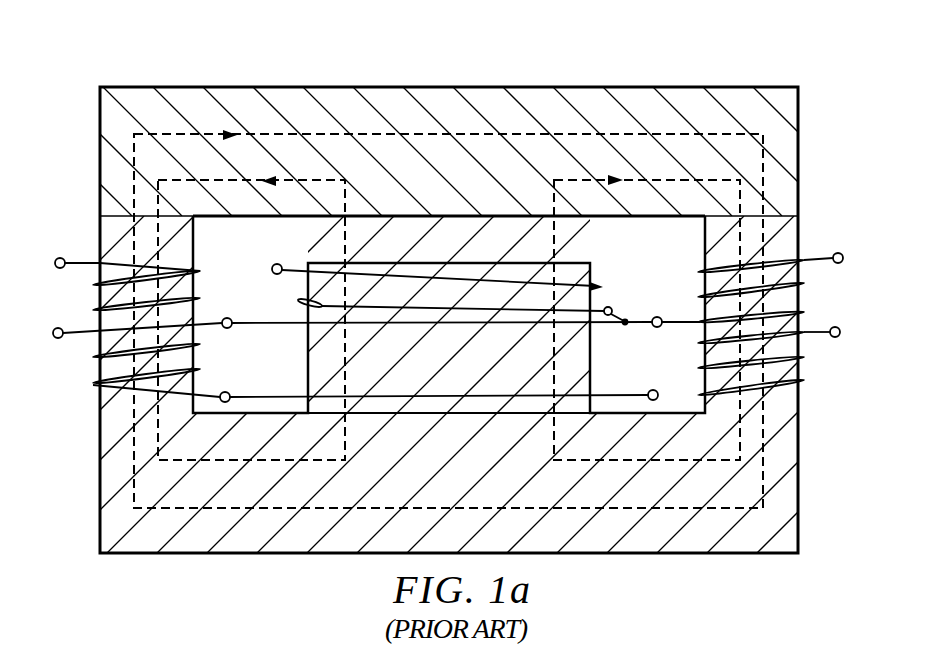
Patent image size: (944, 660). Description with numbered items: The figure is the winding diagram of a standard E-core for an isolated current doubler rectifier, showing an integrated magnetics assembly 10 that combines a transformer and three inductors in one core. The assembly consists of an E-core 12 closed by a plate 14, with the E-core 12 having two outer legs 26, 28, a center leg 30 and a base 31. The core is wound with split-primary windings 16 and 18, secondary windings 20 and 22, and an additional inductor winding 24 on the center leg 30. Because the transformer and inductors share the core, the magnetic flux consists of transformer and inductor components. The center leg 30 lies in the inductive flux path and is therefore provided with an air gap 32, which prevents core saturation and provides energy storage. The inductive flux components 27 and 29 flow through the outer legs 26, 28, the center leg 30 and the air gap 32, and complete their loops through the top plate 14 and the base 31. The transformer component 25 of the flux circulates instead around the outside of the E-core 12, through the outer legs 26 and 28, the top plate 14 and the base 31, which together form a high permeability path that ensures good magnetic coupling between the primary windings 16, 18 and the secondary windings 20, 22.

The integrated magnetics assembly 10 is at (586, 64).
The E-core 12 is at (668, 494).
The plate 14 is at (175, 150).
The split-primary winding 16 is at (93, 357).
The split-primary winding 18 is at (805, 357).
The secondary winding 20 is at (93, 310).
The secondary winding 22 is at (805, 283).
The inductor winding 24 is at (297, 300).
The transformer component of the flux 25 is at (134, 179).
The outer leg 26 is at (107, 234).
The inductive flux component 27 is at (227, 182).
The outer leg 28 is at (796, 233).
The inductive flux component 29 is at (673, 182).
The center leg 30 is at (462, 372).
The base 31 is at (165, 441).
The air gap 32 is at (462, 253).